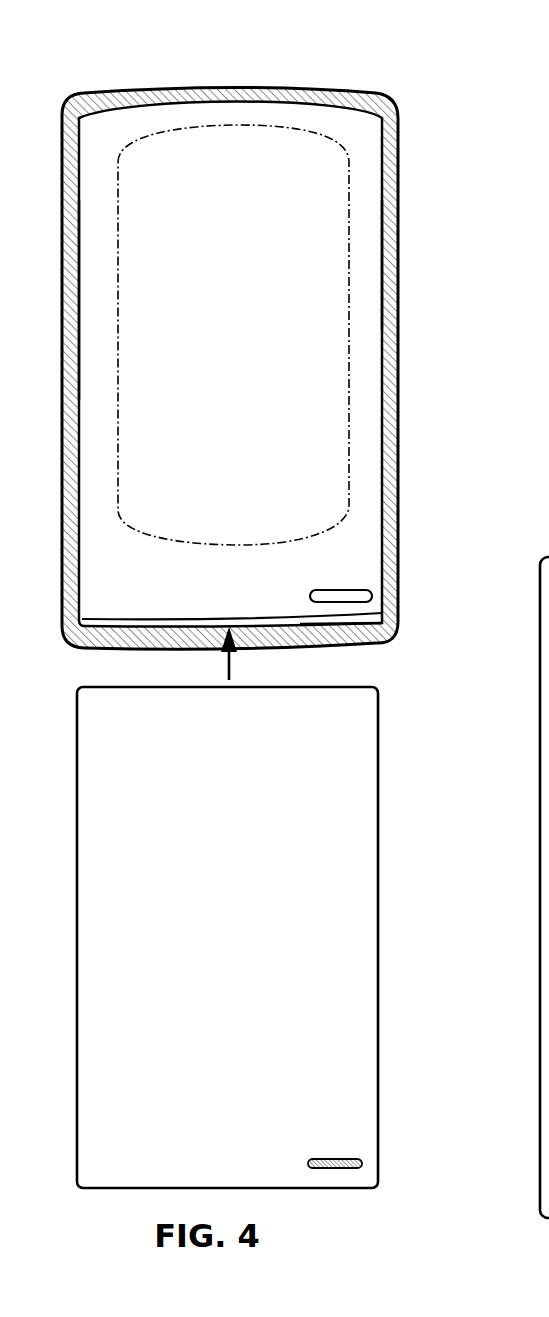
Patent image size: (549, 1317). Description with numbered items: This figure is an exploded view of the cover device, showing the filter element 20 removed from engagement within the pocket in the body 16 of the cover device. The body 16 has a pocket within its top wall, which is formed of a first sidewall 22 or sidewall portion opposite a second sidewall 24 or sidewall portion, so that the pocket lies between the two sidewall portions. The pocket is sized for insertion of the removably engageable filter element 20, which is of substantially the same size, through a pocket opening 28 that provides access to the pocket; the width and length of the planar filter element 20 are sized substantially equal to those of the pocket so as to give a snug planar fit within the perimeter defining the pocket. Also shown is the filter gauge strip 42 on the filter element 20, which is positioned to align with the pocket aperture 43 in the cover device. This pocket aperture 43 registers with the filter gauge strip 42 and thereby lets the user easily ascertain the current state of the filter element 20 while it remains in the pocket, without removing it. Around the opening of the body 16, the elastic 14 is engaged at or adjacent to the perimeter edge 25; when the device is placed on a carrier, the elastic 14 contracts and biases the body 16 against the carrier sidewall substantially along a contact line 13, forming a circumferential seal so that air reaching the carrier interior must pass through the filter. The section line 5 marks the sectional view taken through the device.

The section line 5- 5 is at (400, 220).
The contact line 13 is at (118, 352).
The elastic 14 is at (388, 148).
The body 16 is at (362, 96).
The filter element 20 is at (378, 866).
The first sidewall 22 is at (358, 397).
The second sidewall 24 is at (380, 408).
The perimeter edge 25 is at (400, 280).
The pocket opening 28 is at (387, 633).
The filter gauge strip 42 is at (323, 1168).
The pocket aperture 43 is at (338, 595).